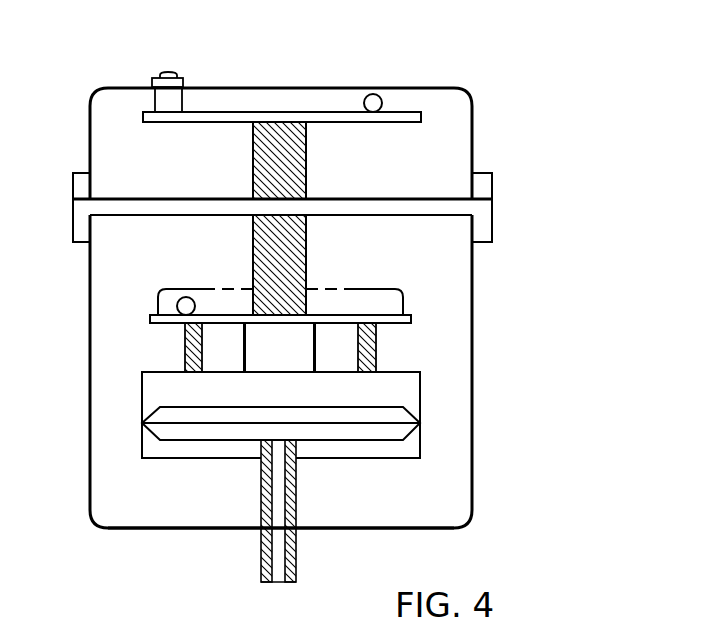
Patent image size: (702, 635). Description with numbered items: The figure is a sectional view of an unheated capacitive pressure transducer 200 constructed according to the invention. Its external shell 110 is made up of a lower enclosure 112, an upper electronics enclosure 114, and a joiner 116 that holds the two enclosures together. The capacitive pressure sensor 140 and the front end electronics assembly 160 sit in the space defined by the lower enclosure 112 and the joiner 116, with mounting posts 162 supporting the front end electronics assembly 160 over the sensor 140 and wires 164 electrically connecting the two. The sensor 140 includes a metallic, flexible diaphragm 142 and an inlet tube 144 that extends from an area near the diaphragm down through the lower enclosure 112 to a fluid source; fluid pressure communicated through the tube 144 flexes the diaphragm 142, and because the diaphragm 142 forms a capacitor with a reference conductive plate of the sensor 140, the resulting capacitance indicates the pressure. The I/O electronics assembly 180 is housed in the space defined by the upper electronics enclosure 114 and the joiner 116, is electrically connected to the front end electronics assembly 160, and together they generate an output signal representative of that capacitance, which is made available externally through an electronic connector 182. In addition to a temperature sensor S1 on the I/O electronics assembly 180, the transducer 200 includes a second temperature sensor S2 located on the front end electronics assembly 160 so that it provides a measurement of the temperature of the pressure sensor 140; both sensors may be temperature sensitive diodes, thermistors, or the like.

The external shell 110 is at (187, 530).
The lower enclosure 112 is at (88, 498).
The upper electronics enclosure 114 is at (88, 112).
The joiner 116 is at (72, 193).
The I/O electronics assembly 180 is at (402, 110).
The electronic connector 182 is at (173, 68).
The temperature sensor S1 is at (374, 94).
The second temperature sensor S2 is at (180, 297).
The front end electronics assembly 160 is at (412, 322).
The mounting posts 162 is at (185, 350).
The wires 164 is at (297, 348).
The capacitive pressure sensor 140 is at (422, 408).
The diaphragm 142 is at (213, 422).
The inlet tube 144 is at (297, 580).
The unheated capacitive pressure transducer 200 is at (512, 262).